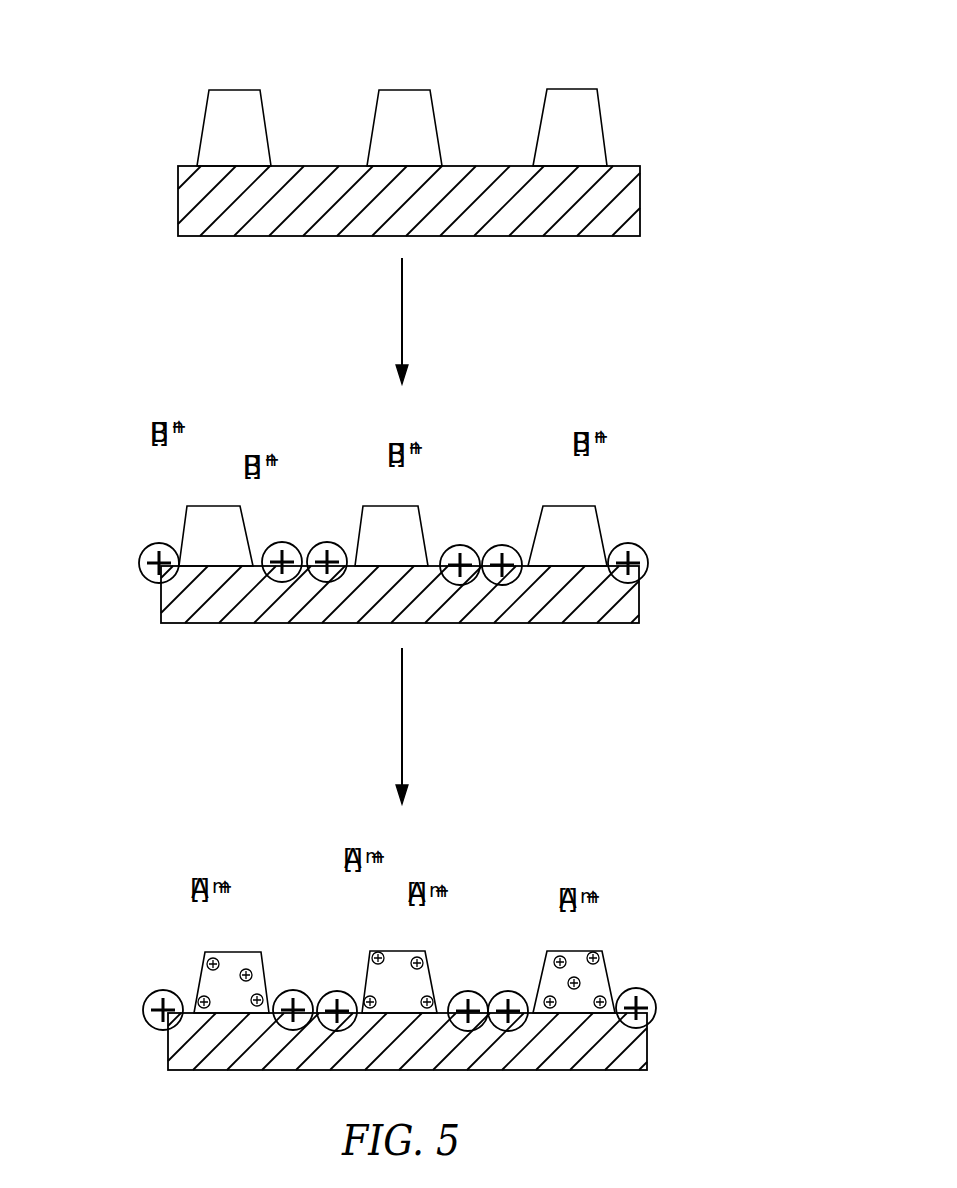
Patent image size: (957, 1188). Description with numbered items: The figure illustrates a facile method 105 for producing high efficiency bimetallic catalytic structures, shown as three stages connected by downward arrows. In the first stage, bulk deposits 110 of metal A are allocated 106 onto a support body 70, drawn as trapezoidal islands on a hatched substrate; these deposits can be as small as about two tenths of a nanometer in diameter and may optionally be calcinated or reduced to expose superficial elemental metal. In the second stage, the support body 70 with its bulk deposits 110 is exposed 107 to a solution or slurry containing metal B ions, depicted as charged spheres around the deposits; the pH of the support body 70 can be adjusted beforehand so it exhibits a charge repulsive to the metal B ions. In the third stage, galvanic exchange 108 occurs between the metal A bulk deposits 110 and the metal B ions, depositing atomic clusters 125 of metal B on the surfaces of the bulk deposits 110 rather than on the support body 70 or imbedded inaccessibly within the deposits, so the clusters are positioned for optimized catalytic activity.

The support body 70 is at (640, 194).
The method 105 is at (720, 83).
The allocating step 106 is at (150, 199).
The exposing step 107 is at (105, 597).
The galvanic exchange 108 is at (110, 1046).
The bulk deposits 110 is at (266, 109).
The atomic clusters 125 is at (363, 993).